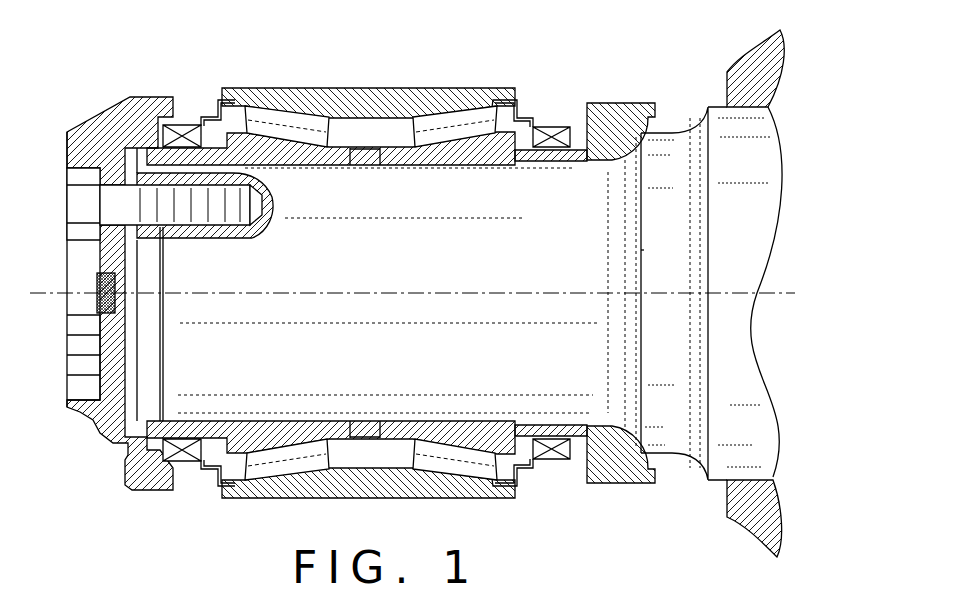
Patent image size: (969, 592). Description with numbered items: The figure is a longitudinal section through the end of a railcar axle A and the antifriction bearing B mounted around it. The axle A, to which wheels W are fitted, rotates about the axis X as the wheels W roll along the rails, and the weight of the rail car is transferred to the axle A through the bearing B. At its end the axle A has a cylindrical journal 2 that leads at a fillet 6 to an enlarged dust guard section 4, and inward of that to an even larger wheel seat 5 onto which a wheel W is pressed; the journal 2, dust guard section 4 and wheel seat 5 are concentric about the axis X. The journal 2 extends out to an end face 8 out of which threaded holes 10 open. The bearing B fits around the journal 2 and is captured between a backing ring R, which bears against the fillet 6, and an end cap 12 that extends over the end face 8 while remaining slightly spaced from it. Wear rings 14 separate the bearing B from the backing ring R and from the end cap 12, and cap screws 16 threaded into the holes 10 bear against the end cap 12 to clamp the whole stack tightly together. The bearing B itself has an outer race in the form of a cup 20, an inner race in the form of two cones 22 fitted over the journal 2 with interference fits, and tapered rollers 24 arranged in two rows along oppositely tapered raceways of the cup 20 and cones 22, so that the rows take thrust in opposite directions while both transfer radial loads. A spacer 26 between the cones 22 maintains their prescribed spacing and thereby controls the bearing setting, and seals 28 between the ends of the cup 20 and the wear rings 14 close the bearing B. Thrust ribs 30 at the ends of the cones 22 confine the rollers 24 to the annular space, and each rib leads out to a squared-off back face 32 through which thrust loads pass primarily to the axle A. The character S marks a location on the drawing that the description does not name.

The journal 2 is at (343, 359).
The dust guard section 4 is at (677, 132).
The wheel seat 5 is at (743, 233).
The fillet 6 is at (641, 250).
The end face 8 is at (96, 410).
The threaded holes 10 is at (205, 215).
The end cap 12 is at (122, 112).
The wear rings 14 is at (203, 422).
The cap screws 16 is at (85, 210).
The cup 20 is at (378, 90).
The cones 22 is at (283, 163).
The tapered rollers 24 is at (285, 112).
The spacer 26 is at (355, 165).
The seals 28 is at (190, 125).
The thrust ribs 30 is at (216, 472).
The back face 32 is at (195, 463).
The axis X is at (806, 293).
The backing ring R is at (620, 96).
The bearing B is at (350, 62).
The seat S is at (668, 460).
The axle A is at (760, 425).
The wheels W is at (753, 523).